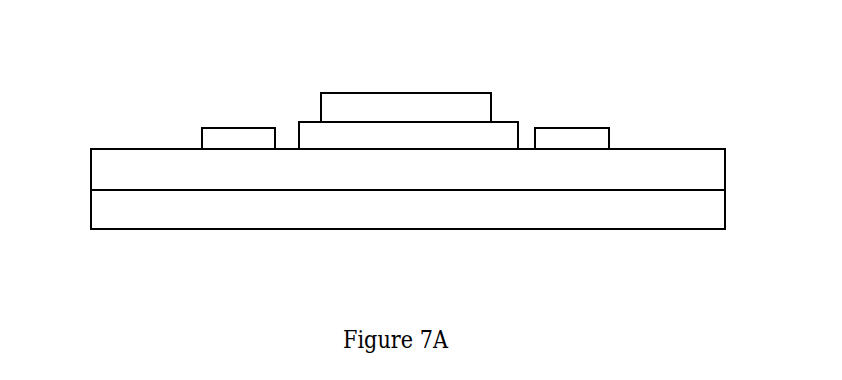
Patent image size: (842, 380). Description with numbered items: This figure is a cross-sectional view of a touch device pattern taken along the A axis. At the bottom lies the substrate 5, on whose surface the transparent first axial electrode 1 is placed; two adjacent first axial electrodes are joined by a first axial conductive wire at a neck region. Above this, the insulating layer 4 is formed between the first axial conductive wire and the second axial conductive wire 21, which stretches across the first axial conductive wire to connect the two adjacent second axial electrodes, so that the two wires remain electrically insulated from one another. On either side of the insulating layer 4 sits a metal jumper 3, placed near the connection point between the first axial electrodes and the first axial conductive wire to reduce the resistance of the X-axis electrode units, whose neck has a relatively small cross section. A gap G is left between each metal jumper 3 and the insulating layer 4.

The first axial electrode 1 is at (96, 166).
The substrate 5 is at (101, 205).
The metal jumper 3 is at (236, 140).
The insulating layer 4 is at (500, 131).
The second axial conductive wire 21 is at (359, 104).
The channel gap G is at (284, 125).